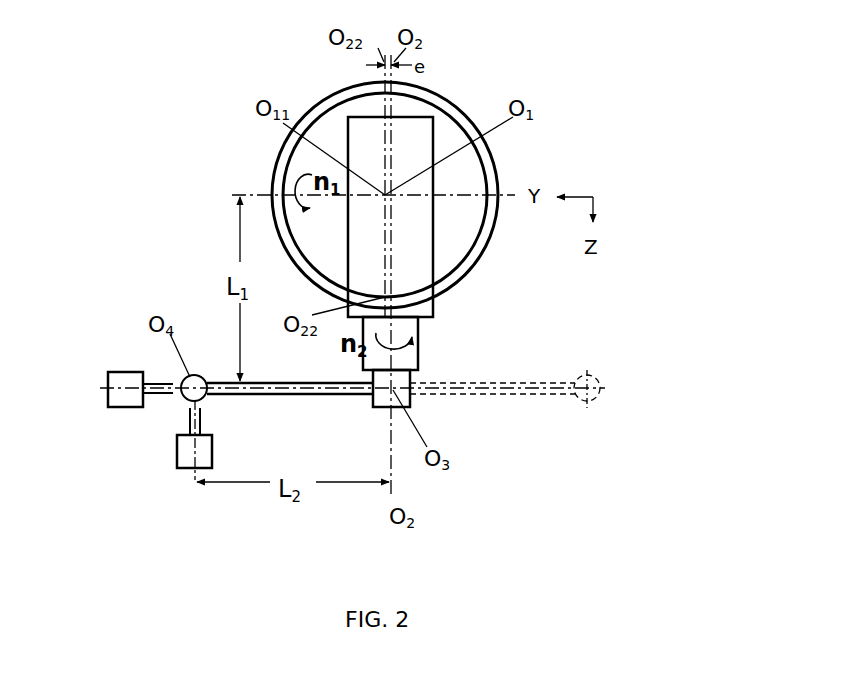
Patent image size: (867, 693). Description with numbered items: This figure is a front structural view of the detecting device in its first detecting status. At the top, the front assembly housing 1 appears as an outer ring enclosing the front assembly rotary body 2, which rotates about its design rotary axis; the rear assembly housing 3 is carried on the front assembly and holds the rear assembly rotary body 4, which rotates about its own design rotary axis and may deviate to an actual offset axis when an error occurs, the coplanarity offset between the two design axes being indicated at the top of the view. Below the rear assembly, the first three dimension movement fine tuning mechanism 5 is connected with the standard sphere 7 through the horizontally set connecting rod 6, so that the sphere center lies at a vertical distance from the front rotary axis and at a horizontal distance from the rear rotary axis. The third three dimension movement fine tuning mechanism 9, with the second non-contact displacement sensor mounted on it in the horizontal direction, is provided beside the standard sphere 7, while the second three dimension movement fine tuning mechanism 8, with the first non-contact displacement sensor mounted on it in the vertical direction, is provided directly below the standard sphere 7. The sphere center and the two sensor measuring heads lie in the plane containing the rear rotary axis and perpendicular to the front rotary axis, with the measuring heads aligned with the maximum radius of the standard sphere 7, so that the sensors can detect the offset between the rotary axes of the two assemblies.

The front assembly housing 1 is at (473, 257).
The front assembly rotary body 2 is at (445, 265).
The rear assembly housing 3 is at (422, 300).
The rear assembly rotary body 4 is at (412, 330).
The first three dimension movement fine tuning mechanism 5 is at (408, 398).
The connecting rod 6 is at (290, 395).
The standard sphere 7 is at (202, 400).
The second three dimension movement fine tuning mechanism 8 is at (188, 452).
The third three dimension movement fine tuning mechanism 9 is at (120, 393).